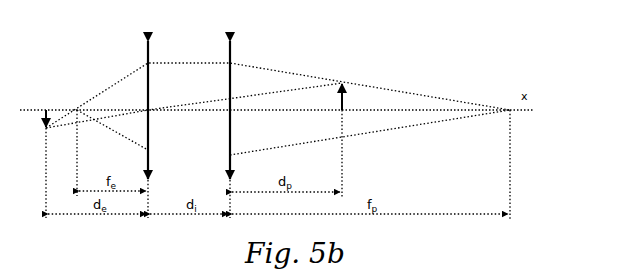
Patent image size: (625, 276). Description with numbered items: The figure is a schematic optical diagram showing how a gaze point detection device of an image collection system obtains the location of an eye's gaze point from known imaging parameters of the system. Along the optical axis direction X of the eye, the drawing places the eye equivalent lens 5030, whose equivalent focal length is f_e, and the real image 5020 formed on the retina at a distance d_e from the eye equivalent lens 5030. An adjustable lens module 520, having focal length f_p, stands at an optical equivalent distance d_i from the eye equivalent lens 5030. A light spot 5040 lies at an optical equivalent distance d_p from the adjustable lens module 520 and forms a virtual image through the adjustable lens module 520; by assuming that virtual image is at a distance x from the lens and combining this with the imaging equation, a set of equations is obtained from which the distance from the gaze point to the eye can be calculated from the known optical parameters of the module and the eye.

The real image 5020 is at (43, 109).
The eye equivalent lens 5030 is at (147, 102).
The adjustable lens module 520 is at (229, 102).
The light spot 5040 is at (336, 86).